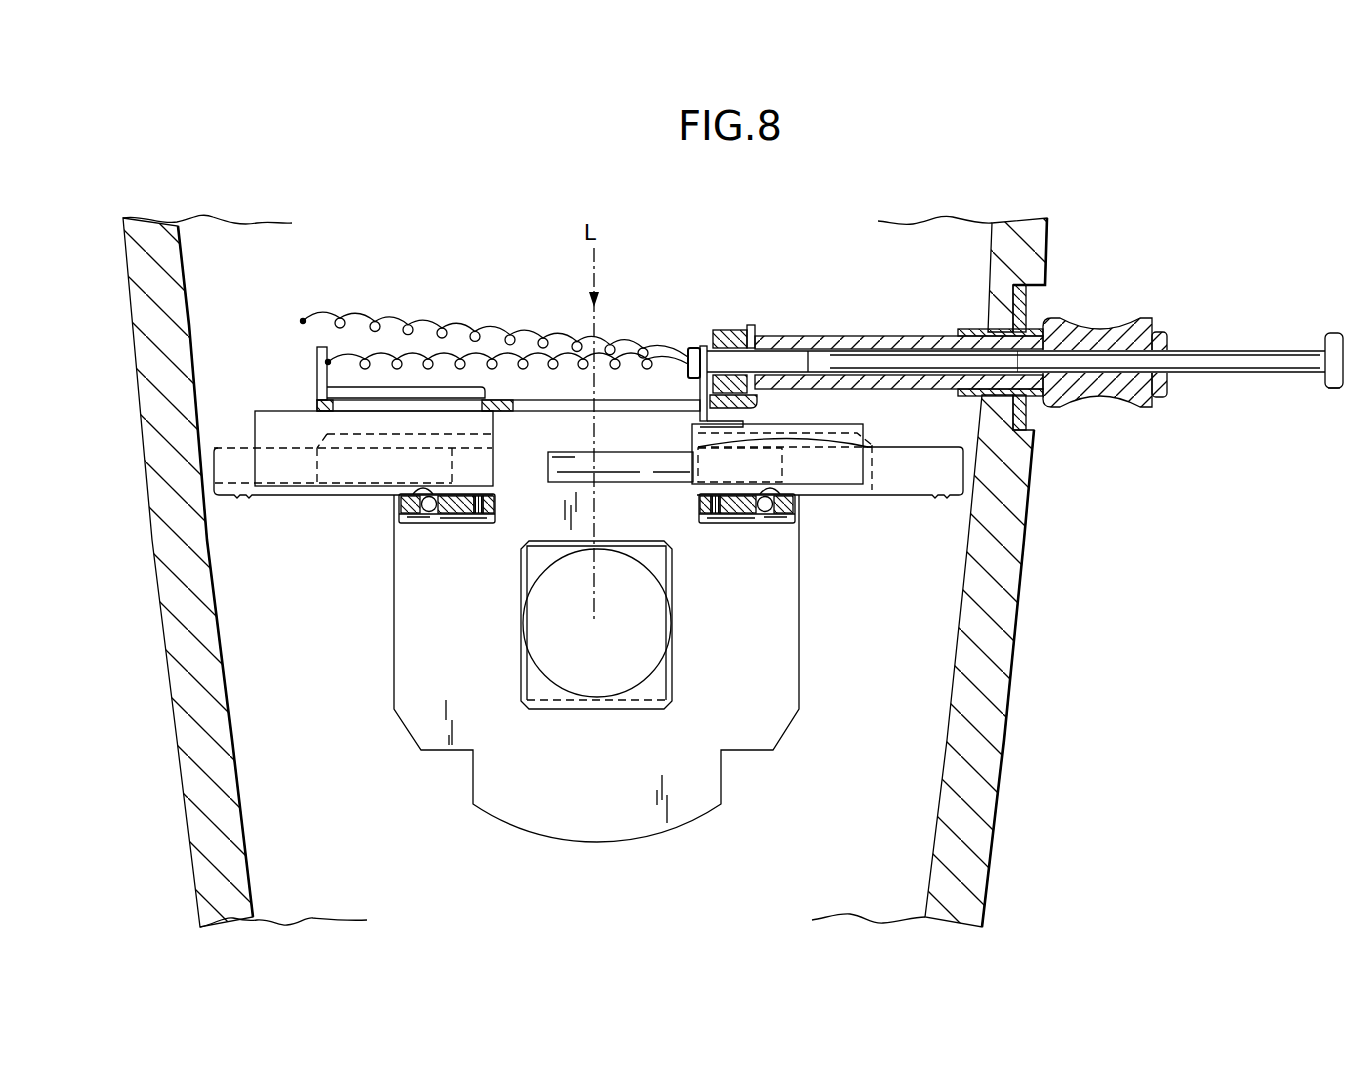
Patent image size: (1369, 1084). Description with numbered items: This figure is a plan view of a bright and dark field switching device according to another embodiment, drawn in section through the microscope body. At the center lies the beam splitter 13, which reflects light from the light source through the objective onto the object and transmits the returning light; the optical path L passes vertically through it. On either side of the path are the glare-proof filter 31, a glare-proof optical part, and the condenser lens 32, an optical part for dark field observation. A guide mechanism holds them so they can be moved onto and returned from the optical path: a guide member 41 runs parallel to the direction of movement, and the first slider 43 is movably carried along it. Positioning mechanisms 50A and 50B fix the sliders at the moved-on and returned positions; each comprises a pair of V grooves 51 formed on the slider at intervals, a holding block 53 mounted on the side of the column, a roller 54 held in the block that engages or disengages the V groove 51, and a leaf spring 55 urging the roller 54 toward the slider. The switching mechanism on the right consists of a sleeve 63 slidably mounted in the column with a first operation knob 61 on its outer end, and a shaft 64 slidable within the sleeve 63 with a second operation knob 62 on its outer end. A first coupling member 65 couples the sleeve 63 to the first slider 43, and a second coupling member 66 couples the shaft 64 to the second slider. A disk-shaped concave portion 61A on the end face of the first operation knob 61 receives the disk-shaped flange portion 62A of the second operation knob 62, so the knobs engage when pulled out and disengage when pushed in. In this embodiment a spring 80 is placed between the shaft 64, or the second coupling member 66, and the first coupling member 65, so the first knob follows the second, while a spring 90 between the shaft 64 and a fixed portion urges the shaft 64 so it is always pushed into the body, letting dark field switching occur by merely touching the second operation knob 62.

The beam splitter 13 is at (672, 652).
The glare-proof filter 31 is at (380, 386).
The condenser lens 32 is at (852, 438).
The guide member 41 is at (213, 462).
The first slider 43 is at (243, 458).
The positioning mechanism 50A is at (369, 590).
The positioning mechanism 50B is at (844, 594).
The V groove 51 is at (394, 497).
The holding block 53 is at (409, 524).
The roller 54 is at (428, 524).
The leaf spring 55 is at (452, 524).
The first operation knob 61 is at (1103, 318).
The concave portion 61A is at (1168, 334).
The second operation knob 62 is at (1326, 335).
The flange portion 62A is at (1333, 389).
The sleeve 63 is at (890, 336).
The shaft 64 is at (1215, 373).
The first coupling member 65 is at (500, 399).
The second coupling member 66 is at (703, 345).
The spring 80 is at (527, 358).
The spring 90 is at (437, 329).